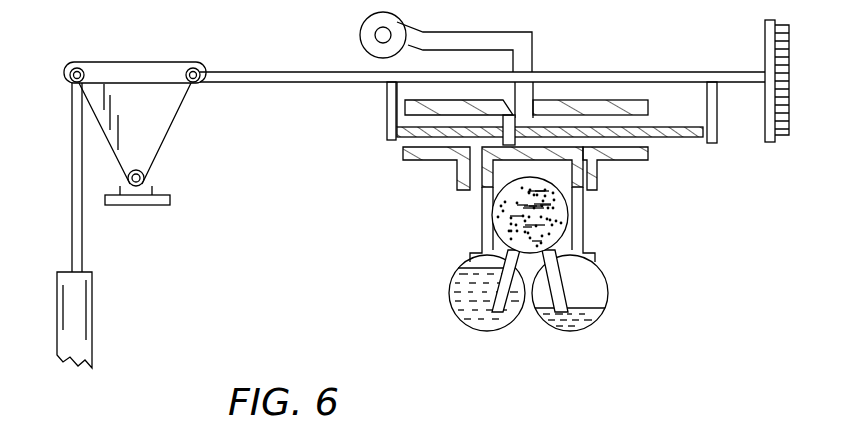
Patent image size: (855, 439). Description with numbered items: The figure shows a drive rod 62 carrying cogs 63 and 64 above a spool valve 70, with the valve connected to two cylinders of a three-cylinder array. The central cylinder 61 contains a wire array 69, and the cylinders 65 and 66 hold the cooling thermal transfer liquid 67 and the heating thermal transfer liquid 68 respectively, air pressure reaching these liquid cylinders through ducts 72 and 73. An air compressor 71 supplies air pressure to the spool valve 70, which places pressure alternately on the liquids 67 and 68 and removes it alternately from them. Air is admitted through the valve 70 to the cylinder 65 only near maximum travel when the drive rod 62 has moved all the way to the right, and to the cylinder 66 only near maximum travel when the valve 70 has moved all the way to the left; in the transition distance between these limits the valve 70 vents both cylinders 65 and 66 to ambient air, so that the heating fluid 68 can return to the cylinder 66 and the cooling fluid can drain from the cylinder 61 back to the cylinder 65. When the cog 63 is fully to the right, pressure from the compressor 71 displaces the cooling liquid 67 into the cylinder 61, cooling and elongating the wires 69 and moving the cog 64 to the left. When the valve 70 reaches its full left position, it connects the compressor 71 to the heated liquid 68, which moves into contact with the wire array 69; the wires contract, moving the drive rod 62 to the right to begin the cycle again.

The cylinder 61 is at (478, 200).
The drive rod 62 is at (279, 72).
The cog 63 is at (387, 112).
The cog 64 is at (718, 113).
The cylinder 65 is at (596, 306).
The cylinder 66 is at (463, 328).
The thermal transfer liquid 67 is at (592, 318).
The thermal transfer liquid 68 is at (466, 290).
The wire array 69 is at (540, 240).
The spool valve 70 is at (645, 103).
The air compressor 71 is at (360, 34).
The duct 72 is at (590, 252).
The duct 73 is at (480, 228).